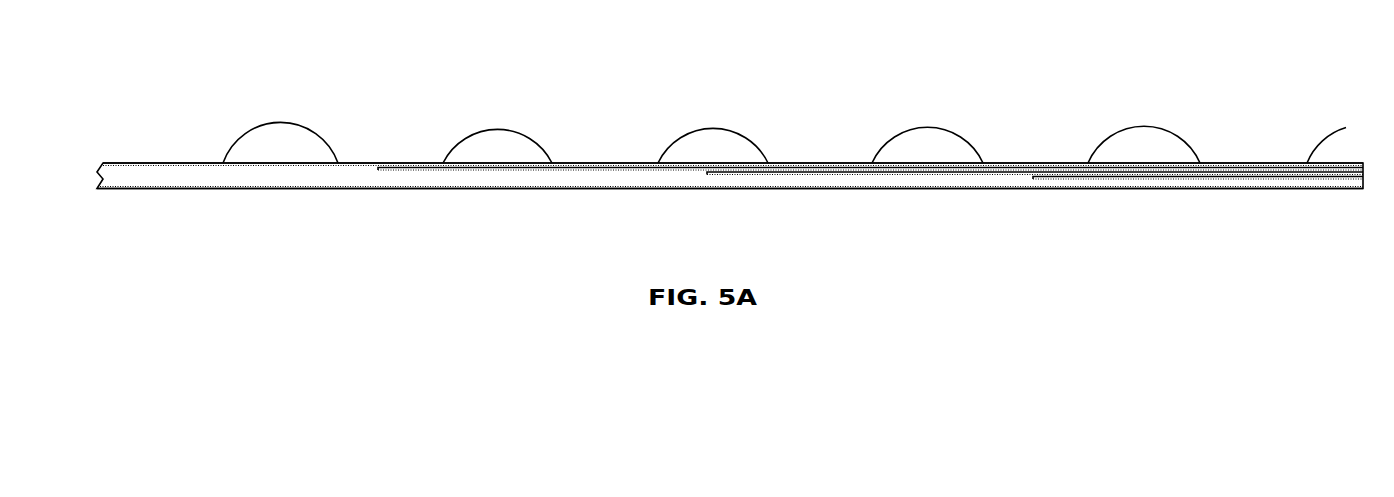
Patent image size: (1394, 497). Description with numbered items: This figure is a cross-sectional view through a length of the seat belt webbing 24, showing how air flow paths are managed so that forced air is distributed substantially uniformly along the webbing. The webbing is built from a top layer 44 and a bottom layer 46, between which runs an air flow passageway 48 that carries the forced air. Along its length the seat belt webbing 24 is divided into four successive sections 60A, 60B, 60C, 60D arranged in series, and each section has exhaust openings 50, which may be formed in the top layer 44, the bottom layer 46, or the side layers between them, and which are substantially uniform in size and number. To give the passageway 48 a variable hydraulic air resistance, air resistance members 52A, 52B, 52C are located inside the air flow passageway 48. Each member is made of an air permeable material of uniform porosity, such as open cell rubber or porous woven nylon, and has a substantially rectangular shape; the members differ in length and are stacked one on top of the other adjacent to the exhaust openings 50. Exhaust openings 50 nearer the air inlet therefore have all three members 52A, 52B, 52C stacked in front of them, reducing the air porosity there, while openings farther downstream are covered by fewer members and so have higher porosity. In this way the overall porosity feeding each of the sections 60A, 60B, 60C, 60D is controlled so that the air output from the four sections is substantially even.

The seat belt webbing 24 is at (176, 136).
The top layer 44 is at (830, 162).
The bottom layer 46 is at (420, 188).
The air flow passageway 48 is at (605, 178).
The exhaust openings 50 is at (798, 135).
The hydraulic air resistance member 52A is at (507, 168).
The hydraulic air resistance member 52B is at (920, 173).
The hydraulic air resistance member 52C is at (1208, 178).
The section 60A is at (1242, 111).
The section 60B is at (796, 111).
The section 60C is at (573, 111).
The section 60D is at (210, 111).